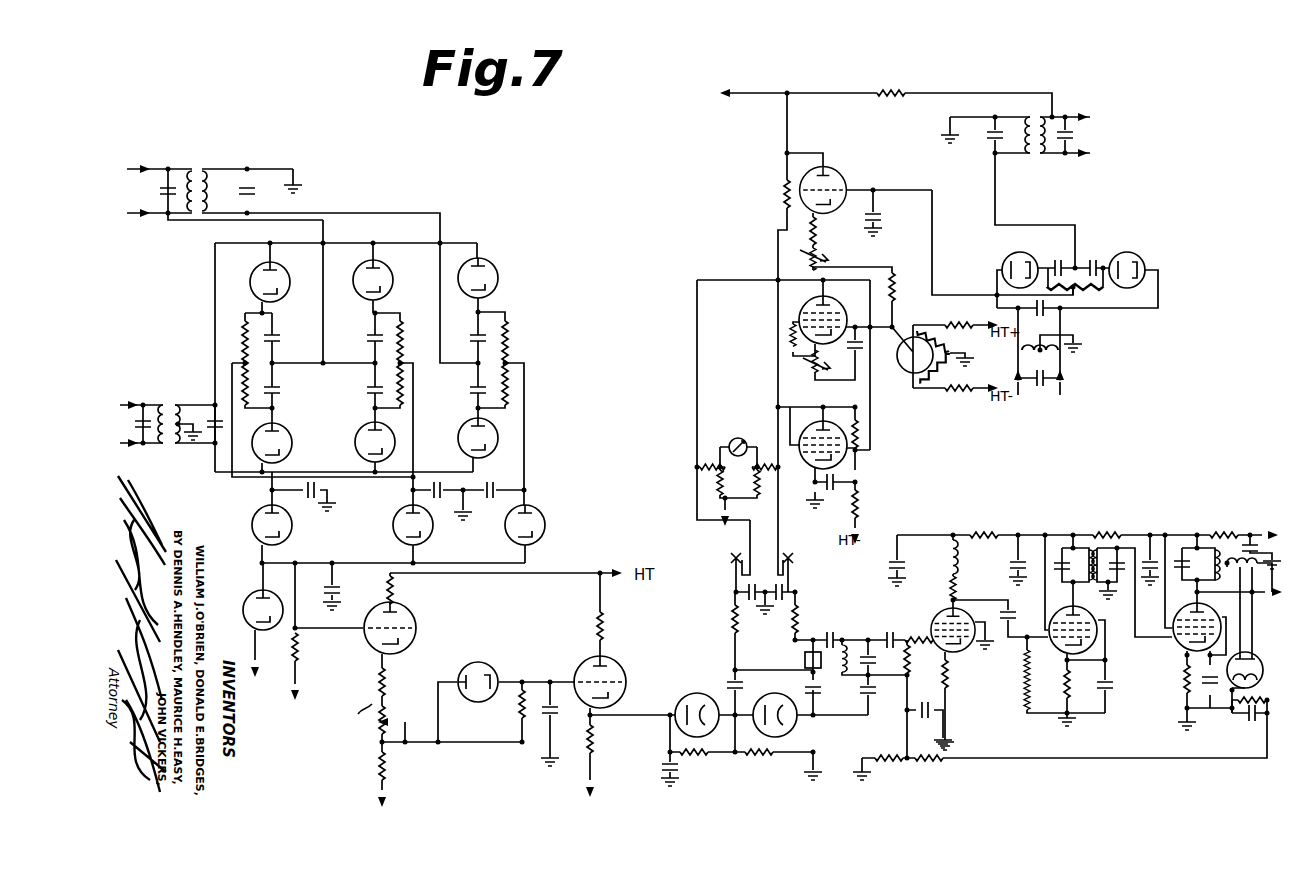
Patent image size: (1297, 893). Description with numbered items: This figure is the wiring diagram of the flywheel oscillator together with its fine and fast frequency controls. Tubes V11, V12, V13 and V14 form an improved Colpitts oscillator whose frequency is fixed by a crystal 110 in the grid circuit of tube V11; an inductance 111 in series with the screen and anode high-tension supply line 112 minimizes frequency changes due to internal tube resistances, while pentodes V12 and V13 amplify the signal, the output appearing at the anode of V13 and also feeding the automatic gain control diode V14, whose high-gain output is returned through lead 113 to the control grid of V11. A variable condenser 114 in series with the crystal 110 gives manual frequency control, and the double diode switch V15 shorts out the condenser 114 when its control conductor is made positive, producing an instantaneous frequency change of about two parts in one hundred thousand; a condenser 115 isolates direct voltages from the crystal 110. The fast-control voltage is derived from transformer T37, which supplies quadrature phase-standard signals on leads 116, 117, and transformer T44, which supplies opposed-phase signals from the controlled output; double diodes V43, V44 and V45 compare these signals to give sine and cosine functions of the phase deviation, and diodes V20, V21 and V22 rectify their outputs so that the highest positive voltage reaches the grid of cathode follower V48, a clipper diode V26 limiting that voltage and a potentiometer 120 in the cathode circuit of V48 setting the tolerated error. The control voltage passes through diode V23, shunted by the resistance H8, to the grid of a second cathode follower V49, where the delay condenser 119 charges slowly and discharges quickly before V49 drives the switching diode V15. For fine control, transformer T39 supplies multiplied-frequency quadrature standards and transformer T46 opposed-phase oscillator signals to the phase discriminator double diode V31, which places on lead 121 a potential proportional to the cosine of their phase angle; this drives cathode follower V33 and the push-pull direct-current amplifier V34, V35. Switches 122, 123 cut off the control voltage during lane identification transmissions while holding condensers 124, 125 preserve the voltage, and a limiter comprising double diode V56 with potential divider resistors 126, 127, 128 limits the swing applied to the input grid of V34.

The crystal 110 is at (806, 658).
The inductance 111 is at (960, 556).
The screen and anode H. T. supply line 112 is at (1135, 532).
The lead 113 is at (1000, 758).
The variable condenser 114 is at (822, 690).
The condenser 115 is at (728, 678).
The lead 116 is at (190, 224).
The lead 117 is at (384, 213).
The condenser 119 is at (542, 738).
The potentiometer 120 is at (350, 713).
The lead 121 is at (938, 190).
The switch 122 is at (722, 566).
The switch 123 is at (796, 562).
The holding condenser 124 is at (790, 612).
The holding condenser 125 is at (794, 585).
The resistor 126 is at (957, 304).
The resistor 127 is at (970, 440).
The resistor 128 is at (941, 393).
The transformer T37 is at (203, 182).
The transformer T39 is at (1043, 118).
The transformer T44 is at (183, 406).
The transformer T46 is at (1062, 356).
The resistor H8 is at (516, 706).
The tube V11 is at (962, 655).
The pentode tube V12 is at (1100, 648).
The pentode tube V13 is at (1178, 650).
The automatic gain control diode V14 is at (1226, 683).
The double diode V15 is at (830, 726).
The diode V20 is at (292, 522).
The diode V21 is at (395, 530).
The diode V22 is at (545, 520).
The diode V23 is at (490, 665).
The diode V26 is at (254, 596).
The double diode V31 is at (1144, 237).
The cathode follower tube V33 is at (848, 176).
The amplifier tube V34 is at (847, 306).
The amplifier tube V35 is at (846, 455).
The double diode V43 is at (283, 432).
The double diode V44 is at (362, 432).
The double diode V45 is at (455, 440).
The triode V48 is at (418, 622).
The cathode follower tube V49 is at (620, 665).
The double diode V56 is at (903, 373).